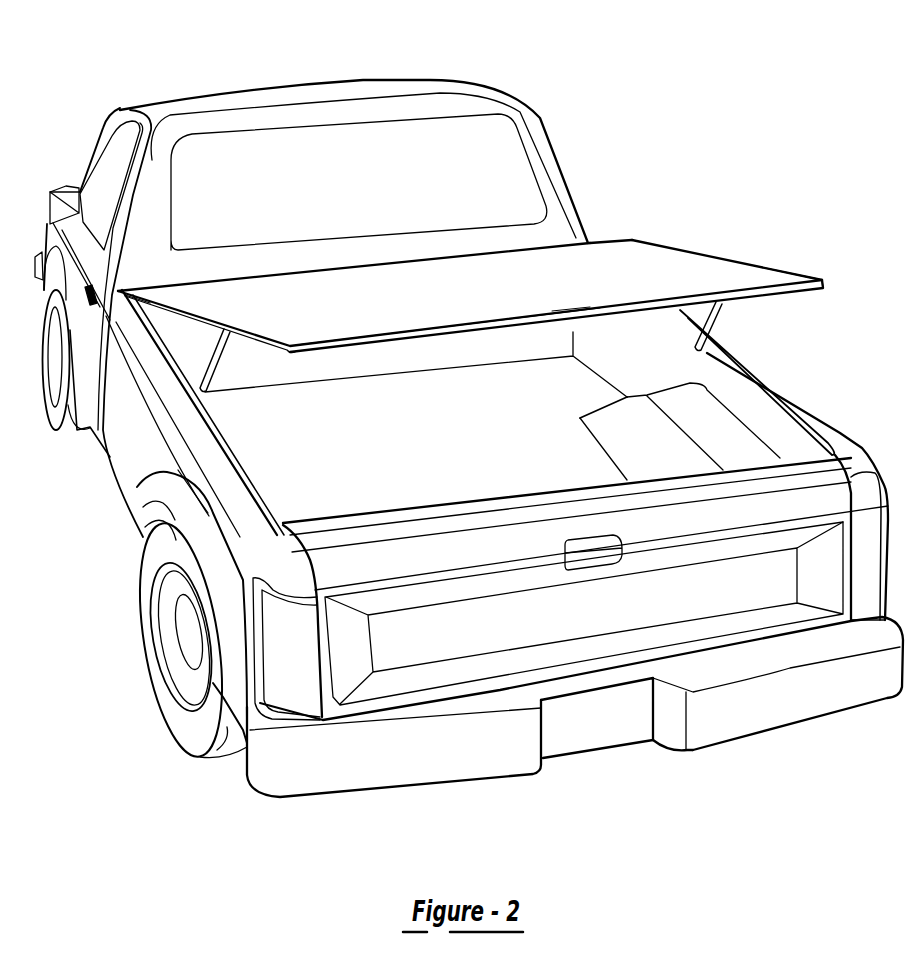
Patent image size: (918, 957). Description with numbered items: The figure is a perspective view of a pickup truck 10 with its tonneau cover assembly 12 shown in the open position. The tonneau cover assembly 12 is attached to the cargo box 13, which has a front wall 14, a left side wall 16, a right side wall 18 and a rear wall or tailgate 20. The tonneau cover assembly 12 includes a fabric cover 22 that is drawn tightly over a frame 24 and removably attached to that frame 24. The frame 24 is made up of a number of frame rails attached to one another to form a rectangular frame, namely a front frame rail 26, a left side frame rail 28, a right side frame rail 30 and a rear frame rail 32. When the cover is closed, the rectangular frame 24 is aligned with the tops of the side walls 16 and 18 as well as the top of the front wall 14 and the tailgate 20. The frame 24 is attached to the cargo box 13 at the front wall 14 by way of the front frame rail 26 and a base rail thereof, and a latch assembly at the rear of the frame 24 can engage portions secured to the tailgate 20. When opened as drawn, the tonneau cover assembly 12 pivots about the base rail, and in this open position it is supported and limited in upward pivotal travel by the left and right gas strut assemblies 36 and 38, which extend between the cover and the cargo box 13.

The pickup truck 10 is at (561, 107).
The tonneau cover assembly 12 is at (654, 236).
The cargo box 13 is at (708, 369).
The front wall 14 is at (363, 347).
The left side wall 16 is at (228, 490).
The right side wall 18 is at (627, 353).
The tailgate 20 is at (493, 550).
The fabric cover 22 is at (663, 280).
The frame 24 is at (408, 336).
The front frame rail 26 is at (335, 262).
The left side frame rail 28 is at (208, 318).
The right side frame rail 30 is at (770, 263).
The rear frame rail 32 is at (562, 313).
The left gas strut assembly 36 is at (218, 355).
The right gas strut assembly 38 is at (720, 308).